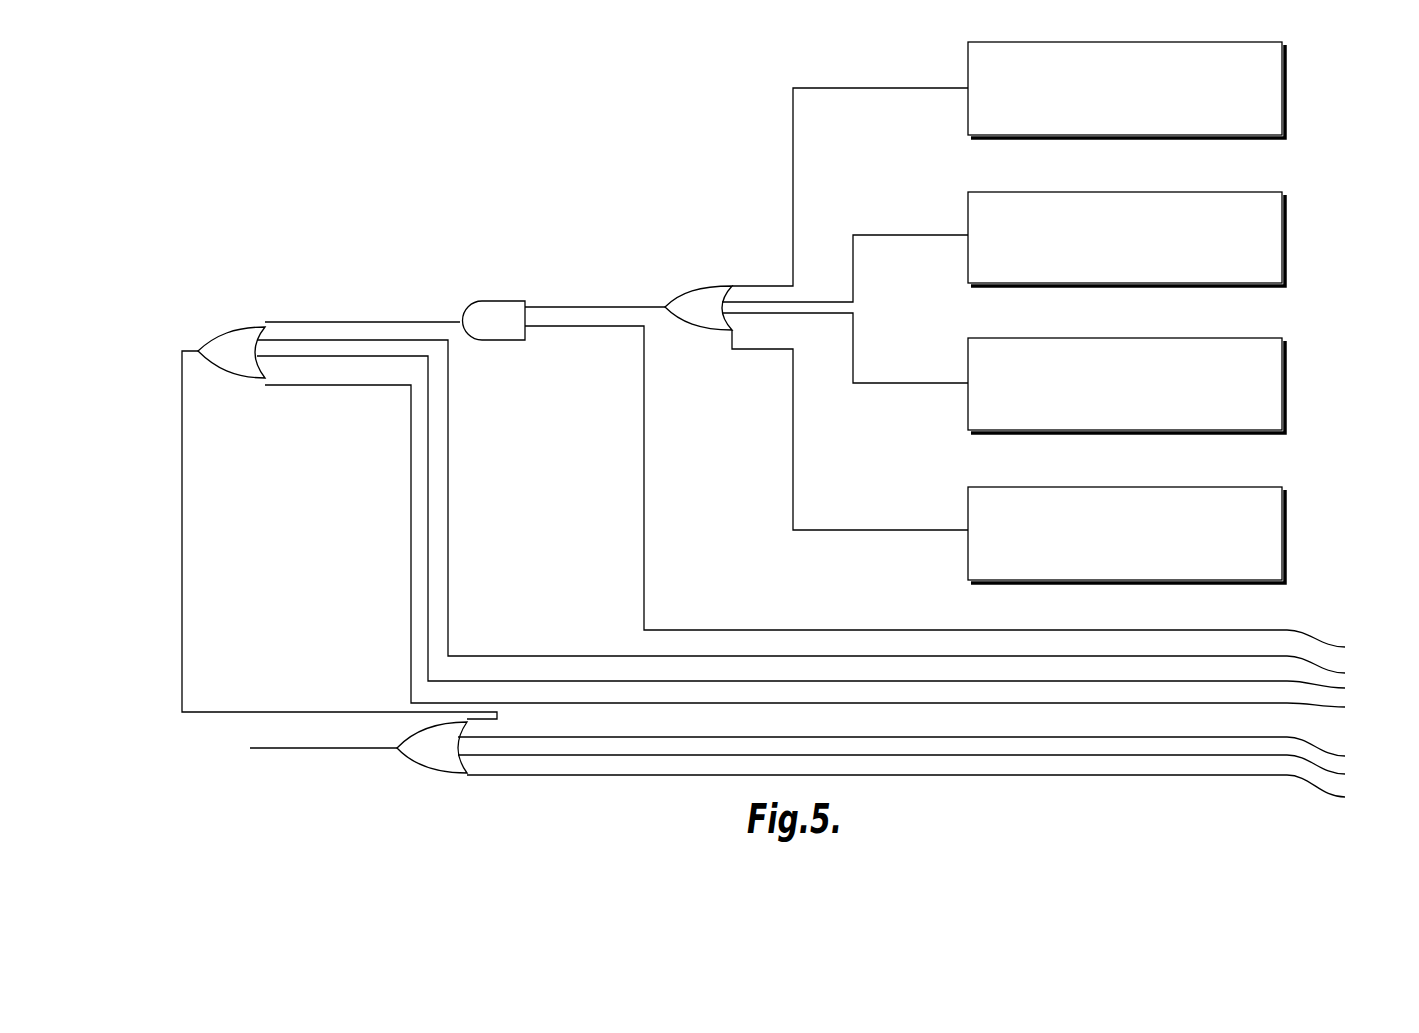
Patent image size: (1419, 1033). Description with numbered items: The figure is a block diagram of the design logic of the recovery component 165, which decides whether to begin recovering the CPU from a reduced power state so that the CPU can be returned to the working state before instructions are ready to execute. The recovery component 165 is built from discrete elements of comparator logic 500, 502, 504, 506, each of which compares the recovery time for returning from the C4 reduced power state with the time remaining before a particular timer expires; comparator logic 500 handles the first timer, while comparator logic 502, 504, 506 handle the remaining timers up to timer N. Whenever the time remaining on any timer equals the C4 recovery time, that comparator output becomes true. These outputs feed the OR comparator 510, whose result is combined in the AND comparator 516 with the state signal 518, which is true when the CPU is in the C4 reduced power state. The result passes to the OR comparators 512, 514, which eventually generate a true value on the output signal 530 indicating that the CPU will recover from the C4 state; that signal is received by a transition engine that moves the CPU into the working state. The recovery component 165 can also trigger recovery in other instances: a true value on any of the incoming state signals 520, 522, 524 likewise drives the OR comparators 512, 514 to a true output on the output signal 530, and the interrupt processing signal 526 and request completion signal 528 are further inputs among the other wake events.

The recovery component 165 is at (286, 105).
The comparator logic 500 is at (1282, 88).
The comparator logic 502 is at (1282, 235).
The comparator logic 504 is at (1282, 383).
The comparator logic 506 is at (1282, 530).
The OR comparator 510 is at (685, 292).
The OR comparator 512 is at (232, 379).
The OR comparator 514 is at (447, 775).
The AND comparator 516 is at (468, 305).
The state signal 518 is at (959, 489).
The incoming state signal 520 is at (825, 509).
The incoming state signal 522 is at (825, 526).
The incoming state signal 524 is at (829, 549).
The interrupt processing signal 526 is at (925, 749).
The request completion signal 528 is at (925, 769).
The other wake events signal 530 is at (282, 748).